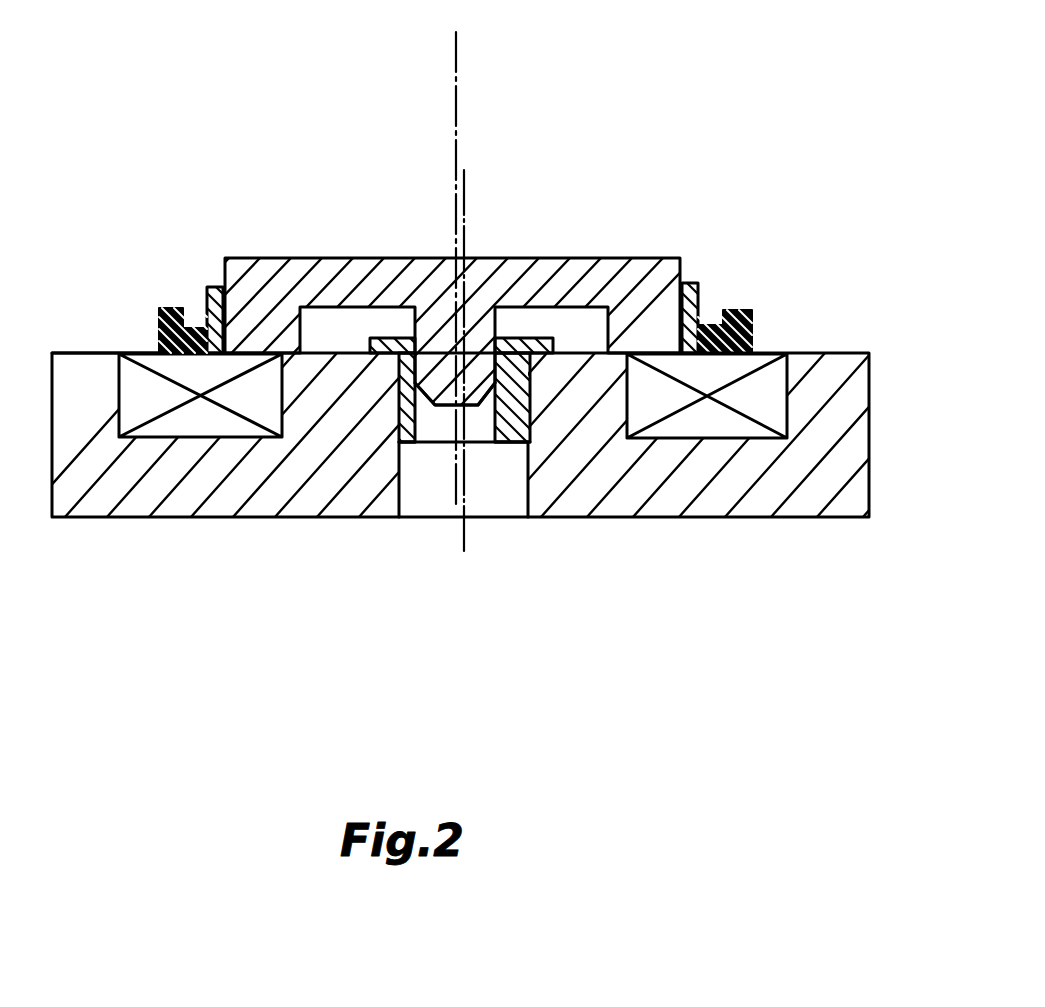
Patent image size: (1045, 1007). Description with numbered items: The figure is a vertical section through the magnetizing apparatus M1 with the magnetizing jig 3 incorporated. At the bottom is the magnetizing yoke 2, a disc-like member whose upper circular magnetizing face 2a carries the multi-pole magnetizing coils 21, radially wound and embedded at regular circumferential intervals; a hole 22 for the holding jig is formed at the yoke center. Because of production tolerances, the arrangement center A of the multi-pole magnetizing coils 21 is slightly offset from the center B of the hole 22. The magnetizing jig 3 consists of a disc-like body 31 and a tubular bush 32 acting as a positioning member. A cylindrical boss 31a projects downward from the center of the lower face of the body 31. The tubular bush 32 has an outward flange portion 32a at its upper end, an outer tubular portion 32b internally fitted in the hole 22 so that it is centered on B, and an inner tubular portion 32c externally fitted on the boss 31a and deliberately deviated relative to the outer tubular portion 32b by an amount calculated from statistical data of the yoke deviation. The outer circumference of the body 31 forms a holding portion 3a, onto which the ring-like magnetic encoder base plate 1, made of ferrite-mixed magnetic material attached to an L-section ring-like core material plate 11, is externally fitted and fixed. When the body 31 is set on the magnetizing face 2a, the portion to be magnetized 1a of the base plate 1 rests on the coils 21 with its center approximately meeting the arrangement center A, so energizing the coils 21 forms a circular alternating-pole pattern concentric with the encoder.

The magnetizing apparatus M1 is at (815, 247).
The ring-like magnetic encoder base plate 1 is at (738, 313).
The portion to be magnetized 1a is at (722, 366).
The ring-like core material plate 11 is at (692, 283).
The magnetizing yoke 2 is at (869, 447).
The circular magnetizing face 2a is at (148, 353).
The multi-pole magnetizing coil 21 is at (773, 397).
The hole for holding jig 22 is at (399, 487).
The magnetizing jig 3 is at (397, 172).
The holding portion of the magnetic encoder base plate 3a is at (223, 275).
The disc-like body 31 is at (400, 258).
The cylindrical boss 31a is at (474, 408).
The tubular bush 32 is at (383, 340).
The outward flange portion 32a is at (548, 347).
The outer tubular portion 32b is at (531, 405).
The inner tubular portion 32c is at (490, 430).
The arrangement center of the multi-pole magnetizing coil A is at (457, 78).
The center of the hole for holding jig B is at (465, 190).